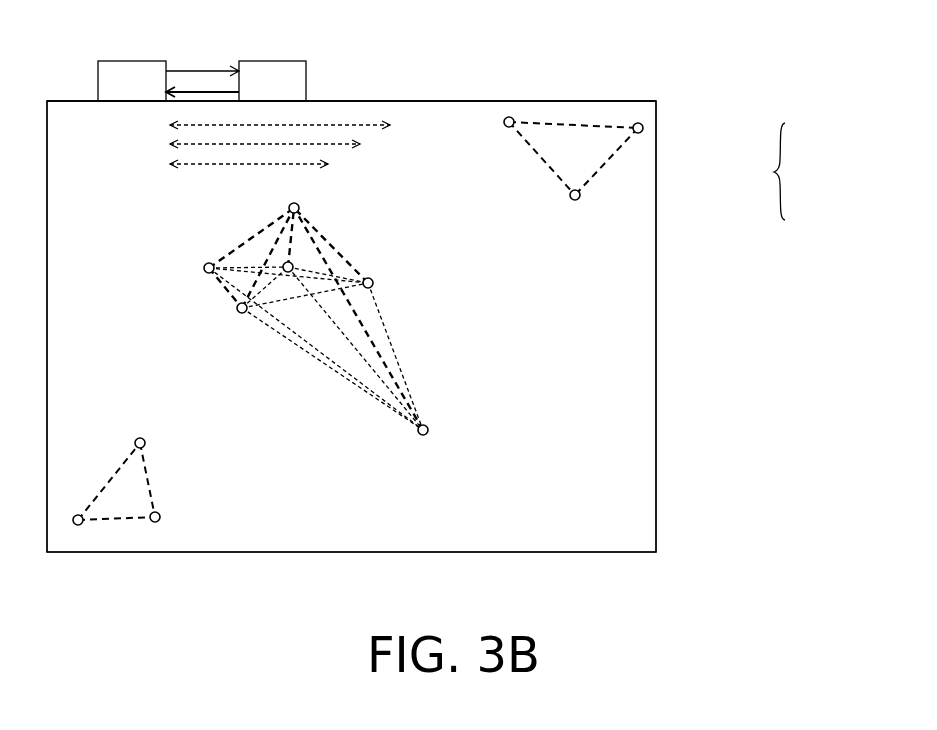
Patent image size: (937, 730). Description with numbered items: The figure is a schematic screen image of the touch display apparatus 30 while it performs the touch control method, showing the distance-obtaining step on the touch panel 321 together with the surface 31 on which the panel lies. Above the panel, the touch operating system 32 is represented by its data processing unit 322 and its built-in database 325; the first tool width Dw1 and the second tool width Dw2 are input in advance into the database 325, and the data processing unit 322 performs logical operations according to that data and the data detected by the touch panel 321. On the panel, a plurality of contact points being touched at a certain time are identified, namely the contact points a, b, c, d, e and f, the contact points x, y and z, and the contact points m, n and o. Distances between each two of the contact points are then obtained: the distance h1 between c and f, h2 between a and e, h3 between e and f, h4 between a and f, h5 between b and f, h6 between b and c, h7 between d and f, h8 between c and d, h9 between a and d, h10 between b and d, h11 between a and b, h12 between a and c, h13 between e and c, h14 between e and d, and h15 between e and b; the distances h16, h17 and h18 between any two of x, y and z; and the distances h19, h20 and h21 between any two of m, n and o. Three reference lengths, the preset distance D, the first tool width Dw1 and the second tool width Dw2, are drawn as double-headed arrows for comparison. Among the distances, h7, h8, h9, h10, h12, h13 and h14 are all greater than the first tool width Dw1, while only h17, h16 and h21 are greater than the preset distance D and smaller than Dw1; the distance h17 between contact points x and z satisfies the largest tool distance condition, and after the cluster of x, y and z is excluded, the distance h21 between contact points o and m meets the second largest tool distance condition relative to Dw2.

The touch display apparatus 30 is at (60, 85).
The sensing surface 31 is at (397, 102).
The touch operating system 32 is at (788, 171).
The touch panel 321 is at (102, 140).
The data processing unit 322 is at (153, 95).
The database 325 is at (293, 95).
The preset distance D is at (258, 164).
The first tool width Dw1 is at (360, 124).
The second tool width Dw2 is at (320, 143).
The distance between contact points c and f h1 is at (334, 248).
The distance between contact points a and e h2 is at (224, 291).
The distance between contact points e and f h3 is at (273, 223).
The distance between contact points a and f h4 is at (266, 262).
The distance between contact points b and f h5 is at (292, 246).
The distance between contact points b and c h6 is at (325, 260).
The distance between contact points d and f h7 is at (400, 370).
The distance between contact points c and d h8 is at (410, 397).
The distance between contact points a and d h9 is at (373, 397).
The distance between contact points b and d h10 is at (347, 338).
The distance between contact points a and b h11 is at (263, 313).
The distance between contact points a and c h12 is at (325, 297).
The distance between contact points e and c h13 is at (295, 298).
The distance between contact points e and d h14 is at (294, 344).
The distance between contact points e and b h15 is at (249, 263).
The distance between contact points x and y h16 is at (533, 158).
The distance between contact points x and z h17 is at (577, 122).
The distance between contact points y and z h18 is at (614, 161).
The distance between contact points m and n h19 is at (169, 480).
The distance between contact points n and o h20 is at (116, 533).
The distance between contact points o and m h21 is at (103, 481).
The contact point a is at (228, 305).
The contact point b is at (291, 265).
The contact point c is at (377, 272).
The contact point d is at (432, 443).
The contact point e is at (198, 255).
The contact point f is at (297, 193).
The contact point x is at (499, 114).
The contact point y is at (583, 199).
The contact point z is at (643, 115).
The contact point m is at (152, 429).
The contact point n is at (164, 525).
The contact point o is at (70, 530).